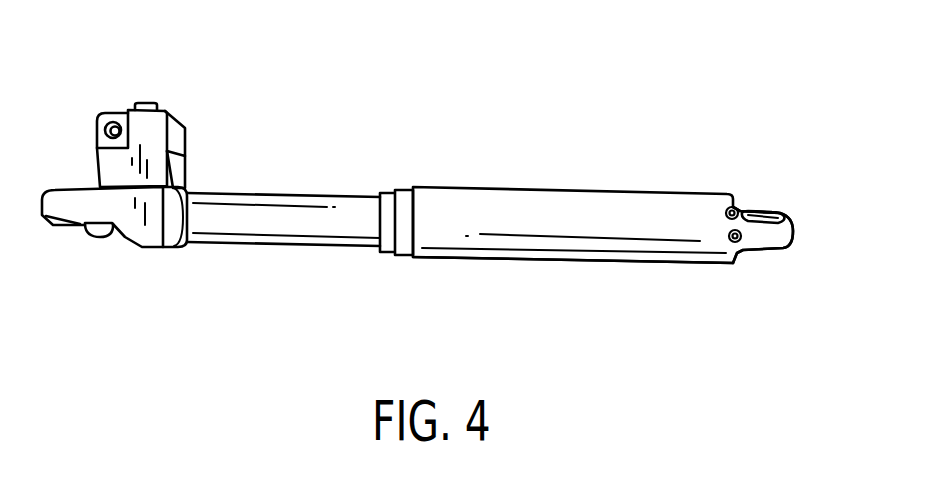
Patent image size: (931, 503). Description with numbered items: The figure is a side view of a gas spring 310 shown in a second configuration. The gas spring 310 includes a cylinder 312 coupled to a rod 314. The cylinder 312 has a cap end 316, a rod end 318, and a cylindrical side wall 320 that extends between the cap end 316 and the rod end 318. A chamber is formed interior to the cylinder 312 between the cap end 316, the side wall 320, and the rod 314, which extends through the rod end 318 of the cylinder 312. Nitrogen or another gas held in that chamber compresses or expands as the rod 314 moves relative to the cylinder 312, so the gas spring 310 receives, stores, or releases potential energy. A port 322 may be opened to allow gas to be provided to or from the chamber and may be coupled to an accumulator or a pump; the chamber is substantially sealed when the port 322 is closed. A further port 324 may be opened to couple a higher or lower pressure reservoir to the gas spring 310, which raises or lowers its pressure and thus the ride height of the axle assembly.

The gas spring 310 is at (440, 196).
The cylinder 312 is at (603, 230).
The rod 314 is at (265, 228).
The cap end 316 is at (747, 263).
The rod end 318 is at (400, 277).
The side wall 320 is at (578, 272).
The port 322 is at (210, 113).
The port 324 is at (723, 209).